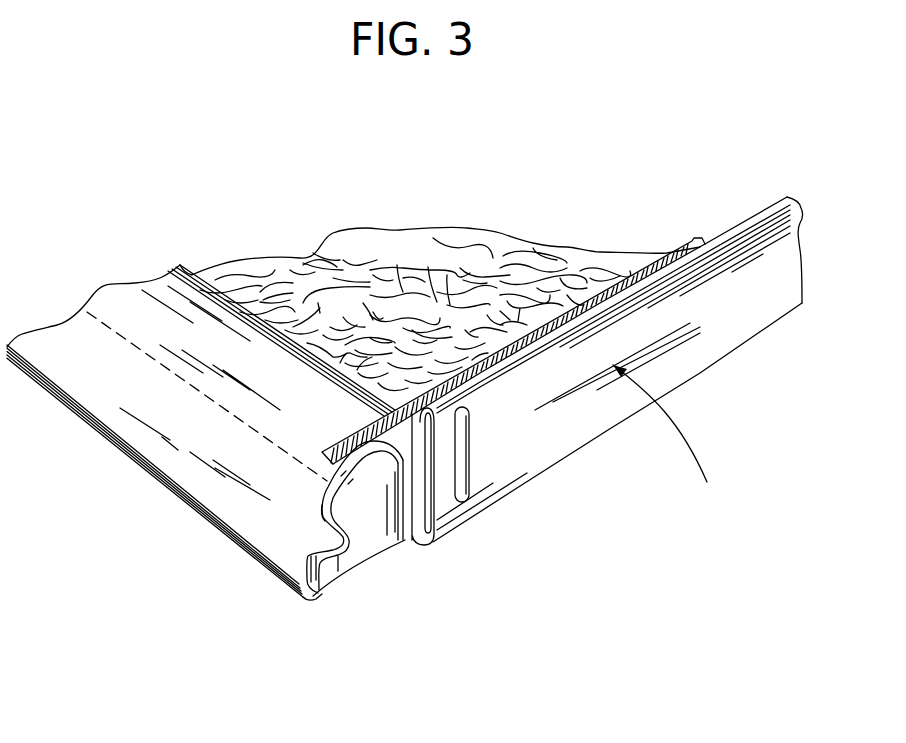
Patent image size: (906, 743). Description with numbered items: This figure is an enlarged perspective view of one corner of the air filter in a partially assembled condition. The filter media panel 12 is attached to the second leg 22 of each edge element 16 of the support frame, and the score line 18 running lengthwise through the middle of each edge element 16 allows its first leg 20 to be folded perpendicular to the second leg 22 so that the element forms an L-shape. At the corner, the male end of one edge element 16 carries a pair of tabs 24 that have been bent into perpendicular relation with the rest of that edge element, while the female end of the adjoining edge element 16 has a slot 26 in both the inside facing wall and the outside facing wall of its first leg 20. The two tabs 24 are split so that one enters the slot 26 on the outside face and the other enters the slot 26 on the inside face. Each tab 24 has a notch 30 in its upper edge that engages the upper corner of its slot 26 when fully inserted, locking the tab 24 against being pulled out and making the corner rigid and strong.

The filter media panel 12 is at (428, 259).
The edge element 16 is at (201, 244).
The score line 18 is at (228, 412).
The first leg 20 is at (707, 330).
The second leg 22 is at (683, 250).
The tab 24 is at (363, 545).
The slot 26 is at (465, 448).
The notch 30 is at (317, 529).